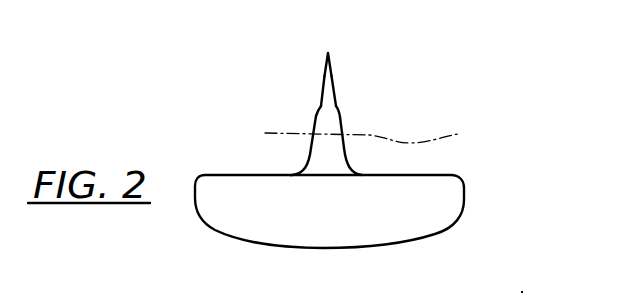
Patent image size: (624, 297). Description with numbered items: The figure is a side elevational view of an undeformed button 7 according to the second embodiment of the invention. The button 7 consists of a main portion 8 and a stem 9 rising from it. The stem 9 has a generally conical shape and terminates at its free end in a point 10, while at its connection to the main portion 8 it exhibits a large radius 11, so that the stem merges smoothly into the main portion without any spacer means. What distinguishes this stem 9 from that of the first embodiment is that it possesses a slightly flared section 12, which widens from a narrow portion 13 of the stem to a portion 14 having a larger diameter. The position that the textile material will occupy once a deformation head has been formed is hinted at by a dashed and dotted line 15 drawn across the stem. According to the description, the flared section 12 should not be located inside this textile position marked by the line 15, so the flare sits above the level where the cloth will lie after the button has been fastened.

The button 7 is at (398, 113).
The main portion 8 is at (427, 198).
The stem 9 is at (340, 122).
The point 10 is at (326, 56).
The large radius 11 is at (302, 173).
The flared section 12 is at (317, 113).
The narrow portion 13 is at (334, 84).
The portion with larger diameter 14 is at (322, 128).
The dashed and dotted line 15 is at (374, 130).